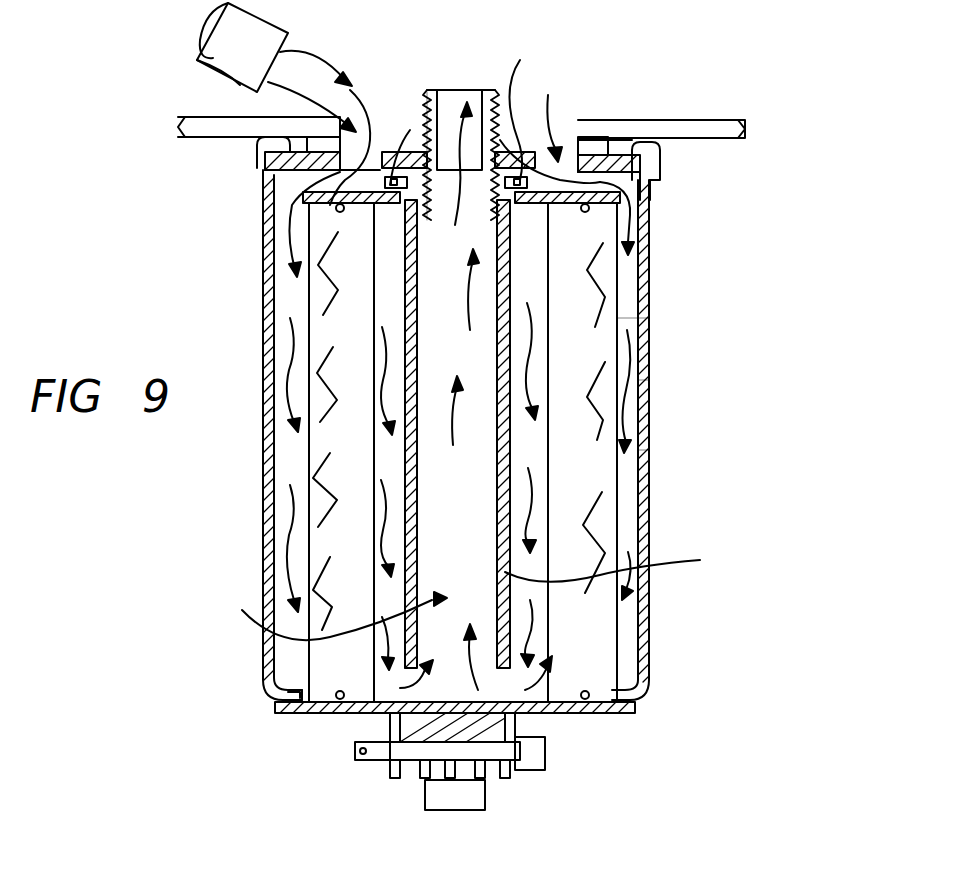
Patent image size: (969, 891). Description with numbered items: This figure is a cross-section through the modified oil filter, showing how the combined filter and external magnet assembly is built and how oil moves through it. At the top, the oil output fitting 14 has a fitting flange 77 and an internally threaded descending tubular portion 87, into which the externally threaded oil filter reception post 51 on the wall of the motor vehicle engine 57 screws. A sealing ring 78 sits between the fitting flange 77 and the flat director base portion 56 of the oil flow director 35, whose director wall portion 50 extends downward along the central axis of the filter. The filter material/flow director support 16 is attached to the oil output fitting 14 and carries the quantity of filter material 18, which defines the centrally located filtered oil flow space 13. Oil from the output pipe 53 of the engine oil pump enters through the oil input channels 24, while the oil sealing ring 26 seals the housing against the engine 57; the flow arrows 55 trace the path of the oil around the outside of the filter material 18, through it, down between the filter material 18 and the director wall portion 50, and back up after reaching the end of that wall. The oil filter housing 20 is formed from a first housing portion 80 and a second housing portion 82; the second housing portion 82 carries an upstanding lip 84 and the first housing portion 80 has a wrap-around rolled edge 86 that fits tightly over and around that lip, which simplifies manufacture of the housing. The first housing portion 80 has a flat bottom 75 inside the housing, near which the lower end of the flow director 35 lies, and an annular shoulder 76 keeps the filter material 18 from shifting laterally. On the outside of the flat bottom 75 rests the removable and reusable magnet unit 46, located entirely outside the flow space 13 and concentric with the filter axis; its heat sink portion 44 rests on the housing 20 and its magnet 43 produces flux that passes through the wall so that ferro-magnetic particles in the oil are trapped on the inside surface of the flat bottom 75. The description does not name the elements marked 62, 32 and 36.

The output pipe 53 is at (200, 60).
The fluid flow 62 is at (362, 150).
The flat director base portion 56 is at (395, 150).
The fitting flange 77 is at (440, 95).
The externally threaded oil filter reception post 51 is at (488, 88).
The sealing ring 78 is at (512, 150).
The oil output fitting 14 is at (556, 140).
The oil input channels 24 is at (580, 150).
The oil sealing ring 26 is at (598, 150).
The motor vehicle engine 57 is at (185, 135).
The wrap-around rolled edge 86 is at (258, 152).
The upstanding lip 84 is at (270, 160).
The filter material/flow director support 16 is at (305, 210).
The second housing portion 82 is at (660, 162).
The oil flow director 35 is at (512, 289).
The oil filter housing 20 is at (650, 388).
The first housing portion 80 is at (642, 450).
The internally threaded descending tubular portion 87 is at (457, 396).
The flow arrows 55 is at (292, 533).
The director wall portion 50 is at (700, 560).
The centrally located filtered oil flow space 13 is at (323, 614).
The quantity of filter material 18 is at (587, 622).
The annular shoulder 76 is at (285, 700).
The flat bottom 75 is at (400, 713).
The base plate 32 is at (345, 716).
The nut 36 is at (545, 752).
The removable and reusable magnet unit 46 is at (362, 777).
The magnet 43 is at (445, 795).
The heat sink portion 44 is at (485, 772).